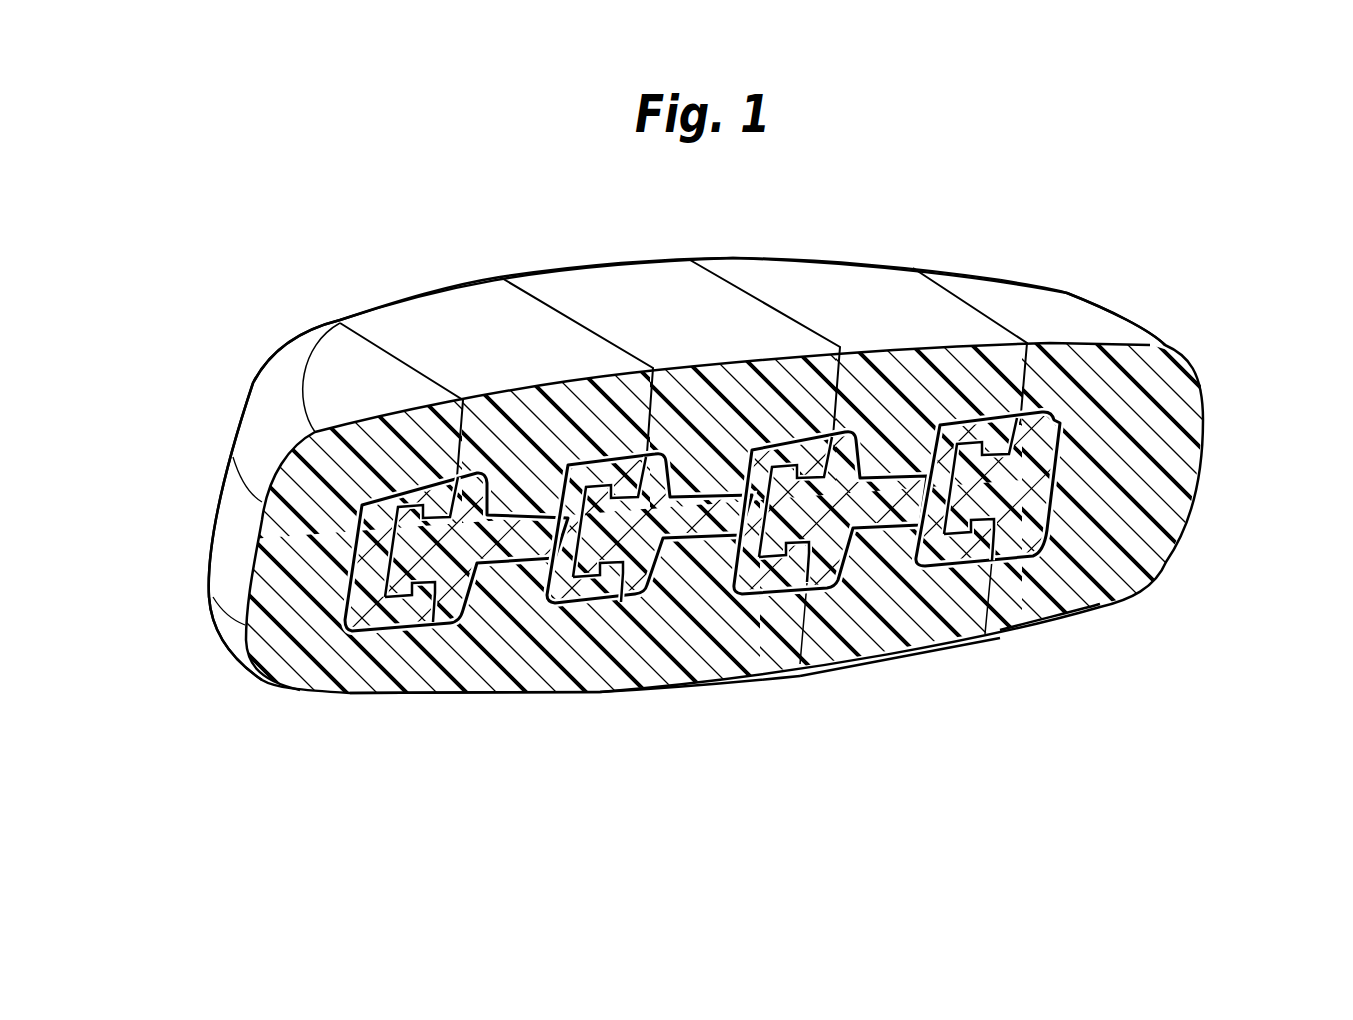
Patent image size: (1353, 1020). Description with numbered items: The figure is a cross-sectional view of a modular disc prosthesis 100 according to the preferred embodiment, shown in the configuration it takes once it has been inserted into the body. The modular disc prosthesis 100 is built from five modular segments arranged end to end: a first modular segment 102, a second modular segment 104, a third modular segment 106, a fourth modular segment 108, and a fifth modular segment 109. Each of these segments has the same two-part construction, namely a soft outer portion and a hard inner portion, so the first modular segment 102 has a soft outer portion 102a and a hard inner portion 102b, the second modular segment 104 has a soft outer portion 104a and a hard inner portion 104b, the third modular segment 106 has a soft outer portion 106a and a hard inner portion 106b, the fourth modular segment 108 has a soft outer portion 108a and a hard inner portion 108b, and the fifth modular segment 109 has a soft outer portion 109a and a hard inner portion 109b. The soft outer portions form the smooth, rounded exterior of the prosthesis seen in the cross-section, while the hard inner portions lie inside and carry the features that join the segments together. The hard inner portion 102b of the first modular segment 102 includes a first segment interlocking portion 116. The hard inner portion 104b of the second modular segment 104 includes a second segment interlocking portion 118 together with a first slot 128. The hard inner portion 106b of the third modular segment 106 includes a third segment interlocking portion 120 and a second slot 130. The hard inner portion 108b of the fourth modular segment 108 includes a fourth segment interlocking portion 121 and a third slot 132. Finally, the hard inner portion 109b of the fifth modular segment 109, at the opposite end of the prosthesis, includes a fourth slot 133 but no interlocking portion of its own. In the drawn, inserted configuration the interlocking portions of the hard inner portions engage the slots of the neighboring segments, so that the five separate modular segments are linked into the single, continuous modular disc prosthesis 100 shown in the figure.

The modular disc prosthesis 100 is at (214, 317).
The first modular segment 102 is at (1167, 376).
The soft outer portion 102a is at (1168, 499).
The hard inner portion 102b is at (1017, 520).
The second modular segment 104 is at (845, 298).
The soft outer portion 104a is at (795, 290).
The hard inner portion 104b is at (880, 548).
The third modular segment 106 is at (662, 292).
The soft outer portion 106a is at (611, 297).
The hard inner portion 106b is at (697, 535).
The fourth modular segment 108 is at (443, 324).
The soft outer portion 108a is at (527, 330).
The hard inner portion 108b is at (487, 565).
The fifth modular segment 109 is at (343, 362).
The soft outer portion 109a is at (257, 410).
The hard inner portion 109b is at (372, 532).
The first segment interlocking portion 116 is at (963, 528).
The second segment interlocking portion 118 is at (833, 545).
The third segment interlocking portion 120 is at (583, 545).
The fourth segment interlocking portion 121 is at (412, 628).
The first slot 128 is at (935, 510).
The second slot 130 is at (737, 555).
The third slot 132 is at (557, 525).
The fourth slot 133 is at (430, 545).